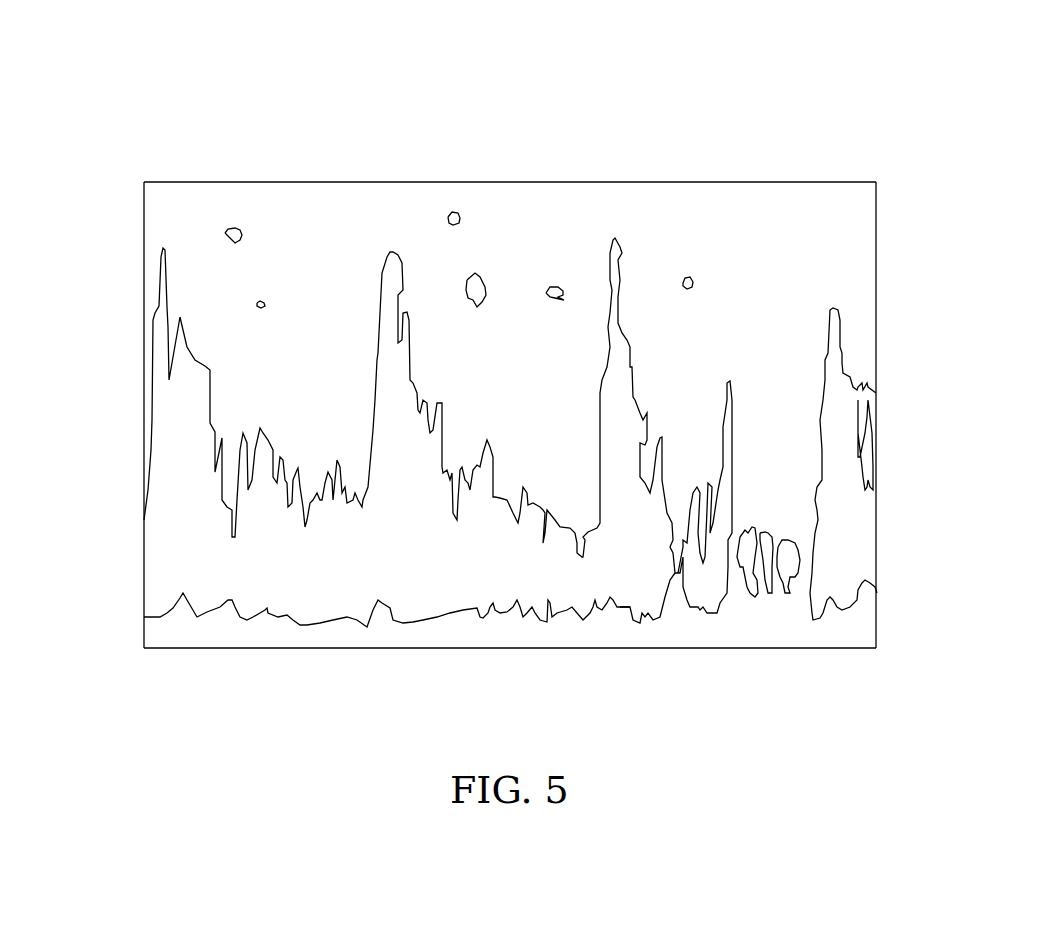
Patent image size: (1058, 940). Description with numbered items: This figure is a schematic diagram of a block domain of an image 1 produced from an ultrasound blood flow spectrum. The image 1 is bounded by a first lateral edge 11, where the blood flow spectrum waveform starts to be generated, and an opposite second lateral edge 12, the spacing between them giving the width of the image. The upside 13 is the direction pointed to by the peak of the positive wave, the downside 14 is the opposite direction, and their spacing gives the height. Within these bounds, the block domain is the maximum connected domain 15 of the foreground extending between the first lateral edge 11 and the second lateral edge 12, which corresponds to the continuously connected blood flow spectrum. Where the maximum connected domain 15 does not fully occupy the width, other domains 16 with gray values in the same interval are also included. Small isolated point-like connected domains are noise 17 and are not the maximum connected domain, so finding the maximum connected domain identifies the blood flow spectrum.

The image 1 is at (140, 172).
The first lateral edge 11 is at (144, 400).
The second lateral edge 12 is at (877, 290).
The upside 13 is at (565, 182).
The downside 14 is at (385, 648).
The maximum connected domain 15 is at (350, 365).
The other domain 16 is at (813, 373).
The noise 17 is at (460, 272).